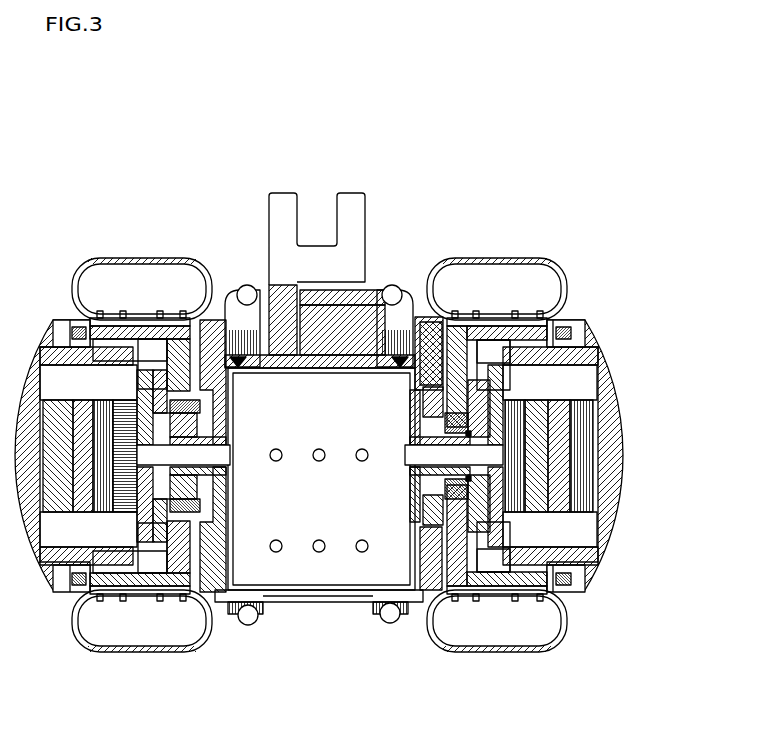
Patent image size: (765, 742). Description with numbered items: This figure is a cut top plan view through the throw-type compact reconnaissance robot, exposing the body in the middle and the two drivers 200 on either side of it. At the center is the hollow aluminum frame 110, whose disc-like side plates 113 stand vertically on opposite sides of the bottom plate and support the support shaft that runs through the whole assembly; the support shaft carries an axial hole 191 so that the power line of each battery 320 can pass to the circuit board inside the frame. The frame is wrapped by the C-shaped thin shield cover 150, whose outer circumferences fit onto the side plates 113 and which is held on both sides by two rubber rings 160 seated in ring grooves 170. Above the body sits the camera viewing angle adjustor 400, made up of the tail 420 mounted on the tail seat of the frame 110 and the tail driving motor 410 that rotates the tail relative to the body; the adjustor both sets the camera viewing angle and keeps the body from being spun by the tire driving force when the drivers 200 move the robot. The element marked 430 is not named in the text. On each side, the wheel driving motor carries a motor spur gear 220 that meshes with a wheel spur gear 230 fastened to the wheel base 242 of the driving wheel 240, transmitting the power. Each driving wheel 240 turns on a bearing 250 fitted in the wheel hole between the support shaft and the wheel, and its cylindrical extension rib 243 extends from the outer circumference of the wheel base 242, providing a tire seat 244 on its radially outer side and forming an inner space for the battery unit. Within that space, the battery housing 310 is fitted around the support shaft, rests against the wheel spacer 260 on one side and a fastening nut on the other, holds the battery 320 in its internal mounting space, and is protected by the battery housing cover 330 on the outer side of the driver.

The frame 110 is at (429, 317).
The side plate 113 is at (208, 596).
The shield cover 150 is at (376, 614).
The rubber ring 160 is at (247, 284).
The ring groove 170 is at (262, 620).
The axial hole 191 is at (417, 474).
The driver 200 is at (143, 226).
The motor spur gear 220 is at (468, 335).
The wheel spur gear 230 is at (392, 612).
The driving wheel 240 is at (505, 638).
The wheel base 242 is at (515, 358).
The extension rib 243 is at (523, 580).
The tire seat 244 is at (565, 610).
The bearing 250 is at (457, 578).
The wheel spacer 260 is at (507, 422).
The battery housing 310 is at (560, 353).
The battery 320 is at (563, 470).
The battery housing cover 330 is at (603, 371).
The camera viewing angle adjustor 400 is at (325, 221).
The tail driving motor 410 is at (271, 210).
The tail 420 is at (342, 196).
The mounting block 430 is at (322, 290).